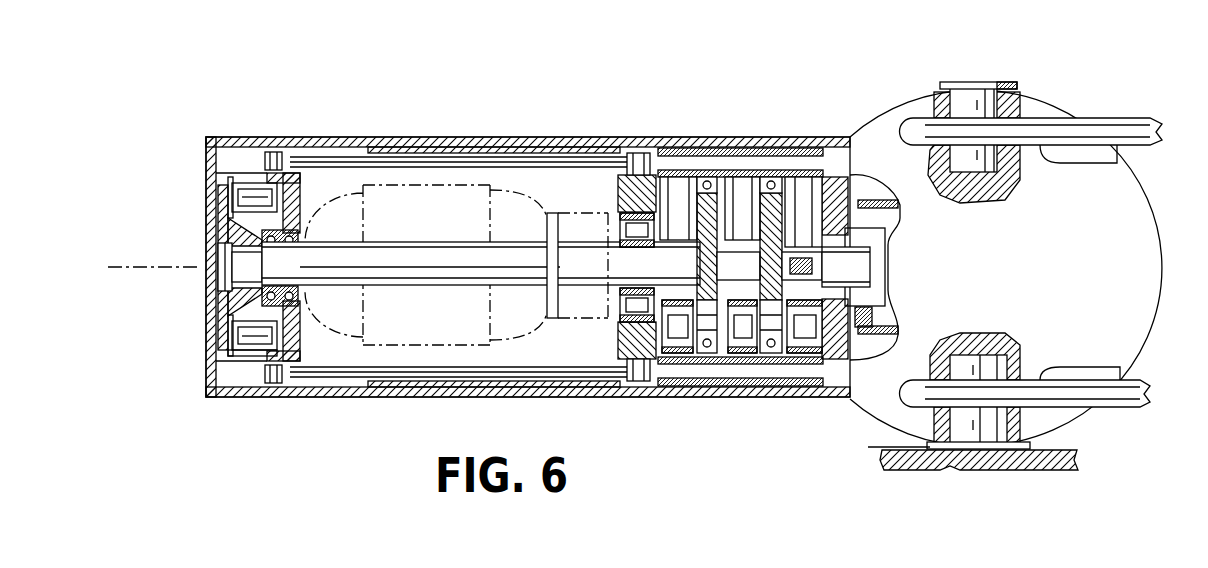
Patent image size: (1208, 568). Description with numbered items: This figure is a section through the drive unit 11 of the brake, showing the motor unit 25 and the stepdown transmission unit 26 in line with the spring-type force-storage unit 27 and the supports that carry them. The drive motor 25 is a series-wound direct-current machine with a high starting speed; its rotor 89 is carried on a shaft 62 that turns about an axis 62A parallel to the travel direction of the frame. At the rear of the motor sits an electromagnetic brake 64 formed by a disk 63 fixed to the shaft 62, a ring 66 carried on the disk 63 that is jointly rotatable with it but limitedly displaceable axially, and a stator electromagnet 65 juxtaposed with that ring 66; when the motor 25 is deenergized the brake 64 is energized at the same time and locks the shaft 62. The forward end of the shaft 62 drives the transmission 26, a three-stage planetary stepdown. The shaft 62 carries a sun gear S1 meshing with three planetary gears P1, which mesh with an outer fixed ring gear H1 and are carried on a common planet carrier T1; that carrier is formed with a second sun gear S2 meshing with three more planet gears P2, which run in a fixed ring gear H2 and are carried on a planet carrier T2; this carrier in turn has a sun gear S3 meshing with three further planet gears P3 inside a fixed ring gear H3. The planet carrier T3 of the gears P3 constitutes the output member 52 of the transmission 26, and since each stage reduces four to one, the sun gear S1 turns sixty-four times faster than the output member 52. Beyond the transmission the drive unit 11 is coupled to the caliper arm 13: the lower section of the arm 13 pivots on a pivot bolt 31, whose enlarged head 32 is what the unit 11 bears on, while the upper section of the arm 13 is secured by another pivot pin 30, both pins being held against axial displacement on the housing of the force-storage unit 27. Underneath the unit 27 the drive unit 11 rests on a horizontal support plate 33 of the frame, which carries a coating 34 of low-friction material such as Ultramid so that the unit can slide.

The drive unit 11 is at (593, 104).
The arm 13 is at (1109, 107).
The motor unit 25 is at (437, 128).
The stepdown transmission unit 26 is at (767, 128).
The spring-type force-storage unit 27 is at (1051, 89).
The pivot pin 30 is at (977, 74).
The pivot bolt 31 is at (1040, 445).
The enlarged head 32 is at (1022, 446).
The support plate 33 is at (970, 470).
The coating 34 is at (884, 430).
The output member 52 is at (900, 211).
The shaft 62 is at (330, 262).
The axis 62A is at (154, 248).
The disk 63 is at (217, 205).
The electromagnetic brake 64 is at (242, 160).
The stator electromagnet 65 is at (259, 190).
The ring 66 is at (232, 353).
The rotor 89 is at (511, 220).
The sun gear S1 is at (657, 145).
The sun gear S2 is at (737, 237).
The sun gear S3 is at (813, 195).
The planetary gears P1 is at (682, 347).
The planet gears P2 is at (750, 347).
The planet gears P3 is at (818, 347).
The ring gear H1 is at (670, 230).
The ring gear H2 is at (737, 350).
The ring gear H3 is at (800, 350).
The planet carrier T1 is at (715, 210).
The planet carrier T2 is at (787, 200).
The planet carrier T3 is at (888, 240).